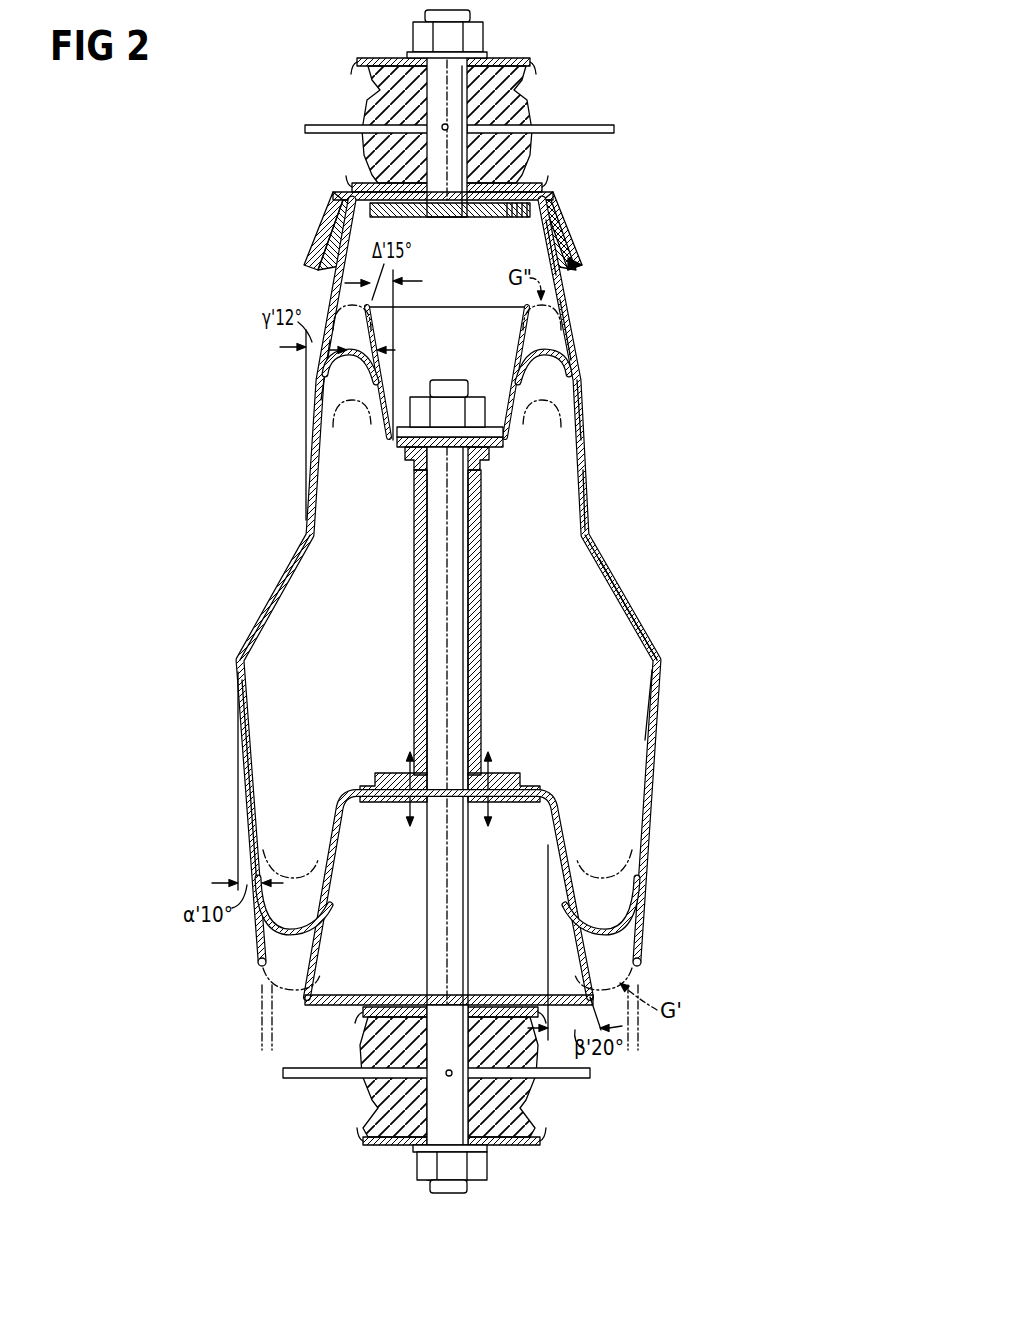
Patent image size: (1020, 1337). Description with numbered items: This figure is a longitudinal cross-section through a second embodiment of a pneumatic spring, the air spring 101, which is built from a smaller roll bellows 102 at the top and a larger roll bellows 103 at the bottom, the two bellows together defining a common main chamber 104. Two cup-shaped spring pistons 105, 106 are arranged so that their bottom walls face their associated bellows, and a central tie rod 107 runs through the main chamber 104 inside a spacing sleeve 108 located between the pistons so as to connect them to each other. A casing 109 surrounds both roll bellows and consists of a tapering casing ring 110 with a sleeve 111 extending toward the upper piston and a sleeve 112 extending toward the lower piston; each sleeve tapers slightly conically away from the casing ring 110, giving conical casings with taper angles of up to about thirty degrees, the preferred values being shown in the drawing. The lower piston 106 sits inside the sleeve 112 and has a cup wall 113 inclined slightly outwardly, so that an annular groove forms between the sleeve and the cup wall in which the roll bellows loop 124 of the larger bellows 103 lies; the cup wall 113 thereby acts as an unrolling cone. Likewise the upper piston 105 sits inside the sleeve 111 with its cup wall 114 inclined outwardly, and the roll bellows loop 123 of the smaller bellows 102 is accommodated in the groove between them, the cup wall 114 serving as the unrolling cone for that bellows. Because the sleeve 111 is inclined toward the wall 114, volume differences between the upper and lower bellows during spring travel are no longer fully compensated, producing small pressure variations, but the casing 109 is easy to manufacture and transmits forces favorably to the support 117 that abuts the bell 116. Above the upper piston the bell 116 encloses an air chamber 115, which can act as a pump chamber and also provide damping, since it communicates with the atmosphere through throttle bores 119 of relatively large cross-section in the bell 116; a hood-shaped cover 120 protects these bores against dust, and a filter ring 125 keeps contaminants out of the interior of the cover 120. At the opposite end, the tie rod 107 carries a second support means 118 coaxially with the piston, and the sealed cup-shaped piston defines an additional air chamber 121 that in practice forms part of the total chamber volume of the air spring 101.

The air spring 101 is at (593, 445).
The smaller roll bellows 102 is at (328, 405).
The larger roll bellows 103 is at (247, 728).
The main chamber 104 is at (552, 542).
The spring piston 105 is at (384, 346).
The spring piston 106 is at (347, 920).
The central tie rod 107 is at (458, 592).
The spacing sleeve 108 is at (481, 640).
The casing 109 is at (615, 573).
The tapering casing ring 110 is at (632, 612).
The sleeve 111 is at (580, 390).
The sleeve 112 is at (580, 497).
The cup wall 113 is at (340, 880).
The cup wall 114 is at (515, 352).
The air chamber 115 is at (502, 259).
The bell 116 is at (574, 285).
The support 117 is at (540, 88).
The second support means 118 is at (342, 1108).
The throttle bores 119 is at (338, 215).
The hood-shaped cover 120 is at (562, 212).
The air chamber 121 is at (527, 933).
The roll bellows loop 123 is at (578, 347).
The roll bellows loop 124 is at (642, 928).
The filter ring 125 is at (578, 255).